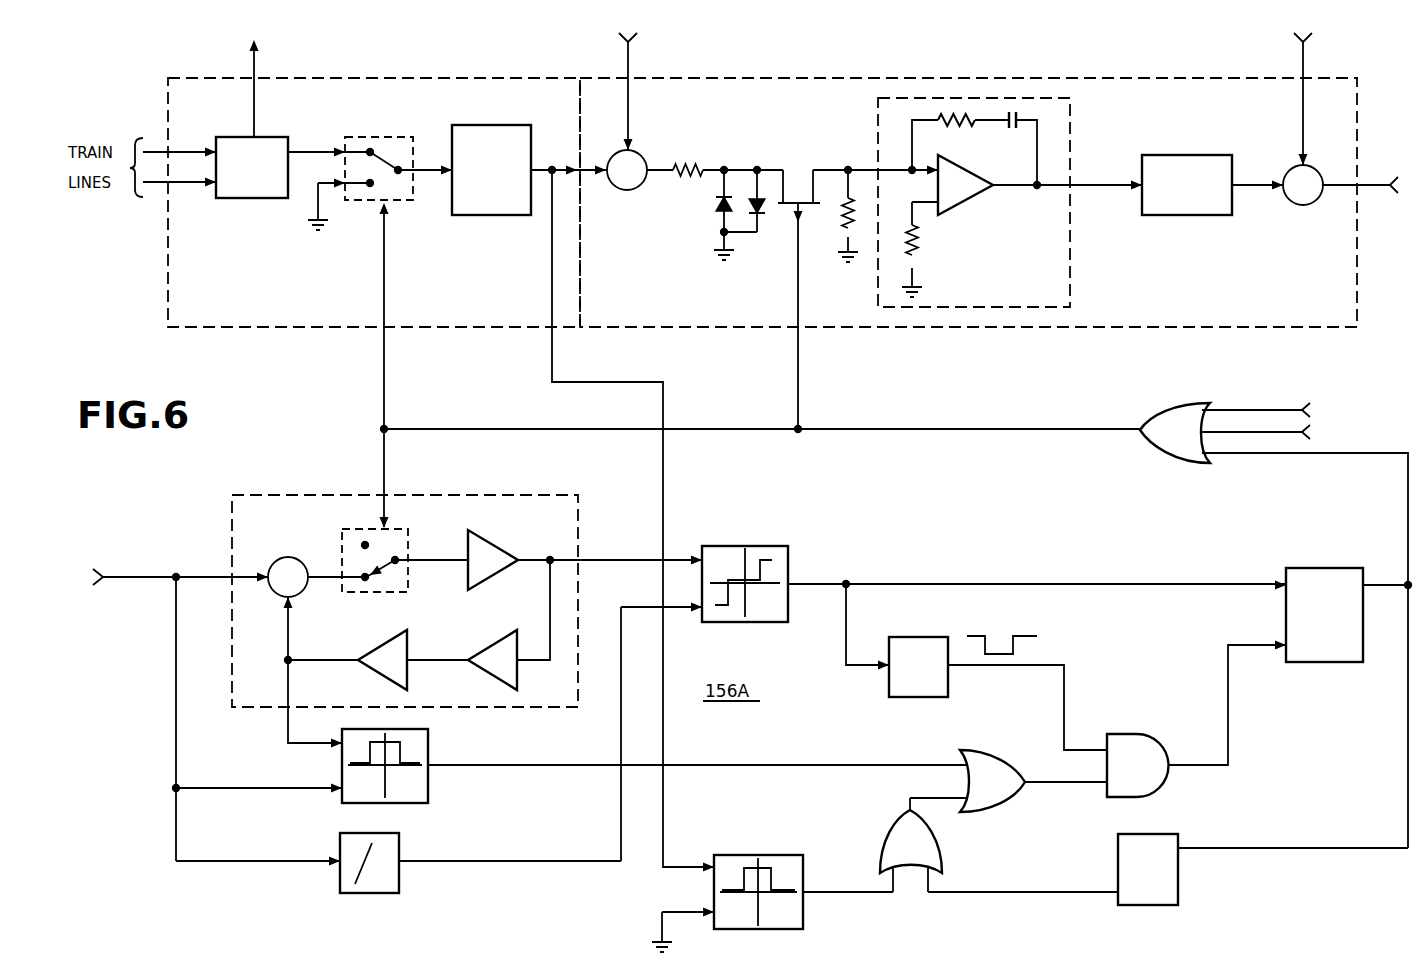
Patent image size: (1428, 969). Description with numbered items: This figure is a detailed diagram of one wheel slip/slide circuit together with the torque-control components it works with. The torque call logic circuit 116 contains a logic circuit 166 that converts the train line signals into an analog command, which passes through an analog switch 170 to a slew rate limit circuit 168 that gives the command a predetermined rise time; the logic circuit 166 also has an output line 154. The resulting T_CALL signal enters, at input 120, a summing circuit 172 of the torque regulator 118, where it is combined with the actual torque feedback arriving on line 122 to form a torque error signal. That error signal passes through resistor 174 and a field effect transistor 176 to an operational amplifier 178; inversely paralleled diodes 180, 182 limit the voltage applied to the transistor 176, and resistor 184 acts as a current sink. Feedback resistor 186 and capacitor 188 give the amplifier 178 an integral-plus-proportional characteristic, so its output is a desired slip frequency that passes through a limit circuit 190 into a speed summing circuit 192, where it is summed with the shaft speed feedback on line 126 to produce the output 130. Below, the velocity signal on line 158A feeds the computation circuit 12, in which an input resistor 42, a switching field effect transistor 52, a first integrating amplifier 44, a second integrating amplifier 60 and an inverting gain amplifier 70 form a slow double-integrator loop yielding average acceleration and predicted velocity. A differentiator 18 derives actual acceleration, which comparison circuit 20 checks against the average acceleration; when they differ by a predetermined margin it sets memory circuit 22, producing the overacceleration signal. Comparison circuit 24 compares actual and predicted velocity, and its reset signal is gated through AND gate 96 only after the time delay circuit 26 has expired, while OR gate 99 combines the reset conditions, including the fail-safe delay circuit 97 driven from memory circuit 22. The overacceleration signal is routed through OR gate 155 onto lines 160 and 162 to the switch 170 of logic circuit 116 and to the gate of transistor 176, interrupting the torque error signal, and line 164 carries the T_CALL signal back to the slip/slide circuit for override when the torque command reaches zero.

The computation circuit 12 is at (280, 492).
The differentiator circuit 18 is at (401, 848).
The comparison circuit 20 is at (772, 540).
The memory circuit 22 is at (1338, 567).
The comparison circuit 24 is at (430, 749).
The time delay circuit 26 is at (922, 634).
The input resistor 42 is at (302, 535).
The first integrating amplifier 44 is at (504, 545).
The field effect transistor 52 is at (410, 535).
The second integrating amplifier 60 is at (496, 638).
The amplifier 70 is at (382, 646).
The AND gate 96 is at (1170, 740).
The delay circuit 97 is at (1178, 895).
The OR gate 99 is at (1016, 750).
The torque call logic circuit 116 is at (401, 77).
The torque regulator 118 is at (947, 77).
The summing node input 120 is at (600, 176).
The line 122 is at (628, 68).
The line 126 is at (1303, 68).
The output terminal 130 is at (1380, 168).
The logic output line 154 is at (252, 56).
The OR gate 155 is at (1166, 398).
The line 158A is at (132, 574).
The line 160 is at (380, 372).
The line 162 is at (798, 390).
The line 164 is at (663, 380).
The logic circuit 166 is at (248, 128).
The slew rate limit circuit 168 is at (490, 128).
The analog switch 170 is at (372, 136).
The summing circuit 172 is at (642, 143).
The resistor 174 is at (684, 155).
The field effect transistor 176 is at (797, 164).
The operational amplifier 178 is at (1022, 204).
The diode 180 is at (718, 203).
The diode 182 is at (766, 218).
The resistor 184 is at (840, 242).
The resistor 186 is at (960, 125).
The capacitor 188 is at (1013, 125).
The limit circuit 190 is at (1190, 151).
The speed summing circuit 192 is at (1310, 202).